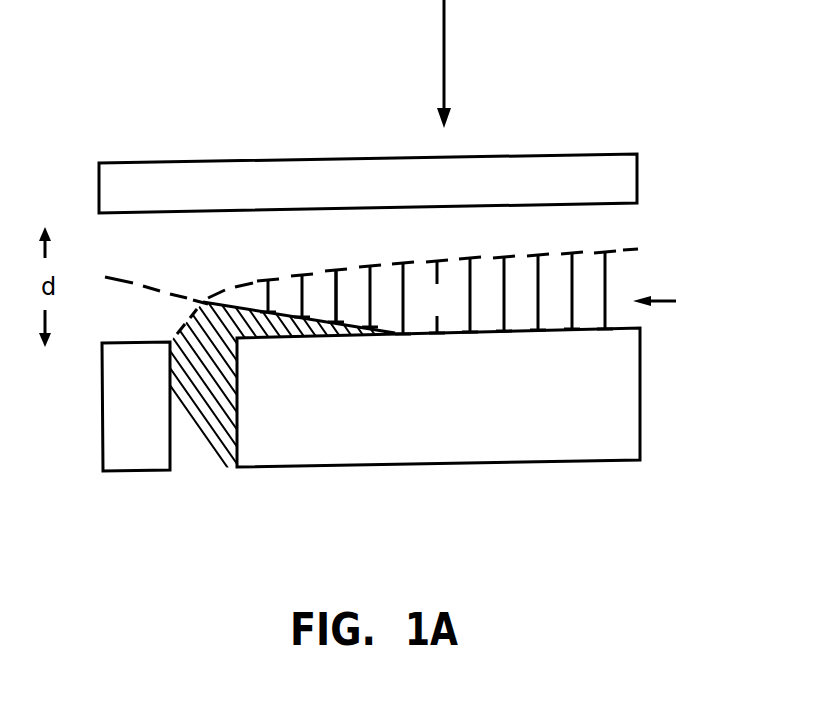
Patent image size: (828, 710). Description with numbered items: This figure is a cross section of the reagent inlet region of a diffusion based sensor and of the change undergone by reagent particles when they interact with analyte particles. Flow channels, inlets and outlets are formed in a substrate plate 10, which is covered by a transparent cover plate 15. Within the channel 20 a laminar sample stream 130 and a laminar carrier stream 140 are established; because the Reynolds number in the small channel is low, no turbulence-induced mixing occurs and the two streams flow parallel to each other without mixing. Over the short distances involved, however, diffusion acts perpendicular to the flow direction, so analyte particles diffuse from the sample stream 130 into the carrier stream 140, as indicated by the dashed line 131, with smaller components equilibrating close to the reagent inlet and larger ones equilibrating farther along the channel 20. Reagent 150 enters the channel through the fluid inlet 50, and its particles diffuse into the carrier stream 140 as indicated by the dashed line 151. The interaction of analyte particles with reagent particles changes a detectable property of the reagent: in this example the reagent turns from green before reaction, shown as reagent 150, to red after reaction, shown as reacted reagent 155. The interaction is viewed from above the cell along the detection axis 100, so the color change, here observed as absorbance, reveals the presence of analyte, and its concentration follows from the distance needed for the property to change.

The substrate plate 10 is at (641, 407).
The transparent cover plate 15 is at (637, 172).
The flow channel 20 is at (671, 301).
The fluid inlet 50 is at (237, 417).
The detection axis 100 is at (445, 80).
The sample stream 130 is at (153, 247).
The dashed line indicating diffusion of analyte particles 131 is at (171, 295).
The carrier stream 140 is at (153, 325).
The reagent 150 is at (222, 425).
The dashed line indicating diffusion of reagent particles 151 is at (330, 272).
The reacted reagent 155 is at (460, 313).